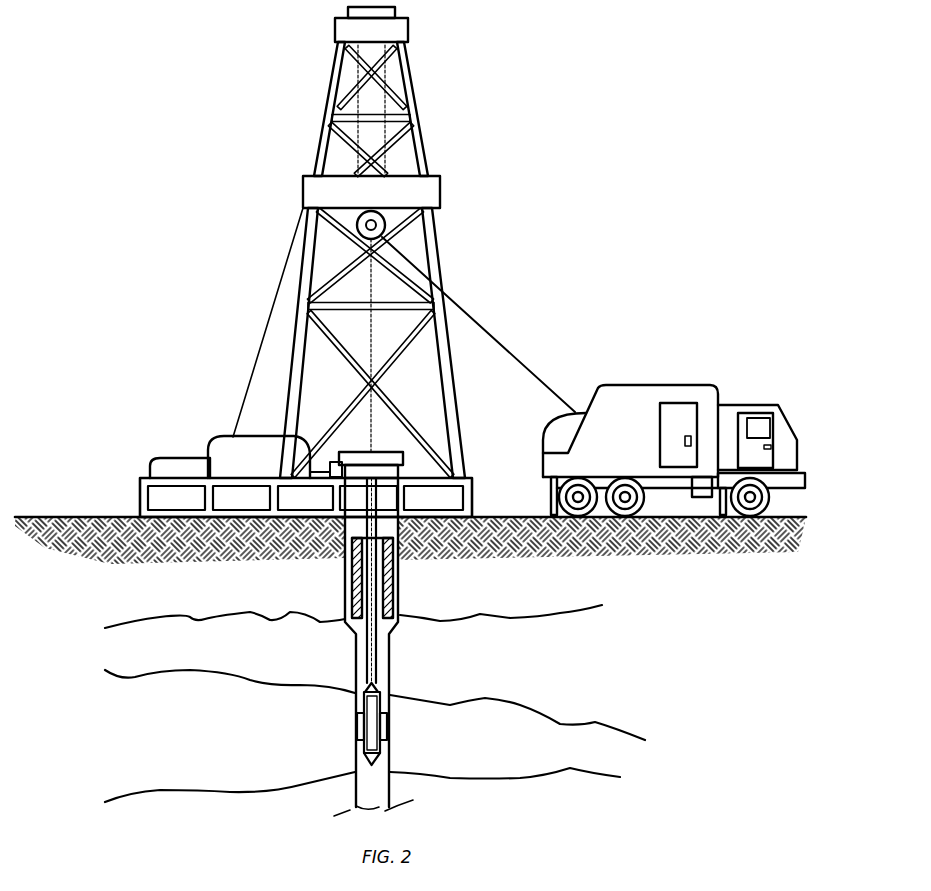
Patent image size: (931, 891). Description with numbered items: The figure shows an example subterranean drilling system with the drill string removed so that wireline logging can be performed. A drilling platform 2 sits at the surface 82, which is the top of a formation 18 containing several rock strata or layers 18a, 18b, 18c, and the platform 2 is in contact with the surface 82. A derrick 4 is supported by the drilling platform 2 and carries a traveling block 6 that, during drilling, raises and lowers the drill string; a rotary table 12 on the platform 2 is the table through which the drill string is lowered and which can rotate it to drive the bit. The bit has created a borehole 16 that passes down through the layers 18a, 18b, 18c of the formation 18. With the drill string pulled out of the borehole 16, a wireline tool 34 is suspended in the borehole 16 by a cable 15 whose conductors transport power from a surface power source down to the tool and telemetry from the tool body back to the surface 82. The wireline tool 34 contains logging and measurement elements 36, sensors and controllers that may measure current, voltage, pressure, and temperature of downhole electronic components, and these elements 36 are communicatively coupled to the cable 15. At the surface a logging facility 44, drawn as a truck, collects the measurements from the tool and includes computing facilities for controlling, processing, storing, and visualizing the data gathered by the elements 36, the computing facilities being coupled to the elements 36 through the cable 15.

The drilling platform 2 is at (140, 488).
The derrick 4 is at (412, 88).
The traveling block 6 is at (385, 226).
The rotary table 12 is at (400, 455).
The cable 15 is at (375, 568).
The borehole 16 is at (378, 657).
The formation 18 is at (677, 610).
The rock stratum 18a is at (160, 613).
The rock stratum 18b is at (160, 662).
The rock stratum 18c is at (160, 752).
The wireline tool 34 is at (381, 718).
The logging and measurement elements 36 is at (357, 740).
The logging facility 44 is at (664, 386).
The surface 82 is at (42, 517).